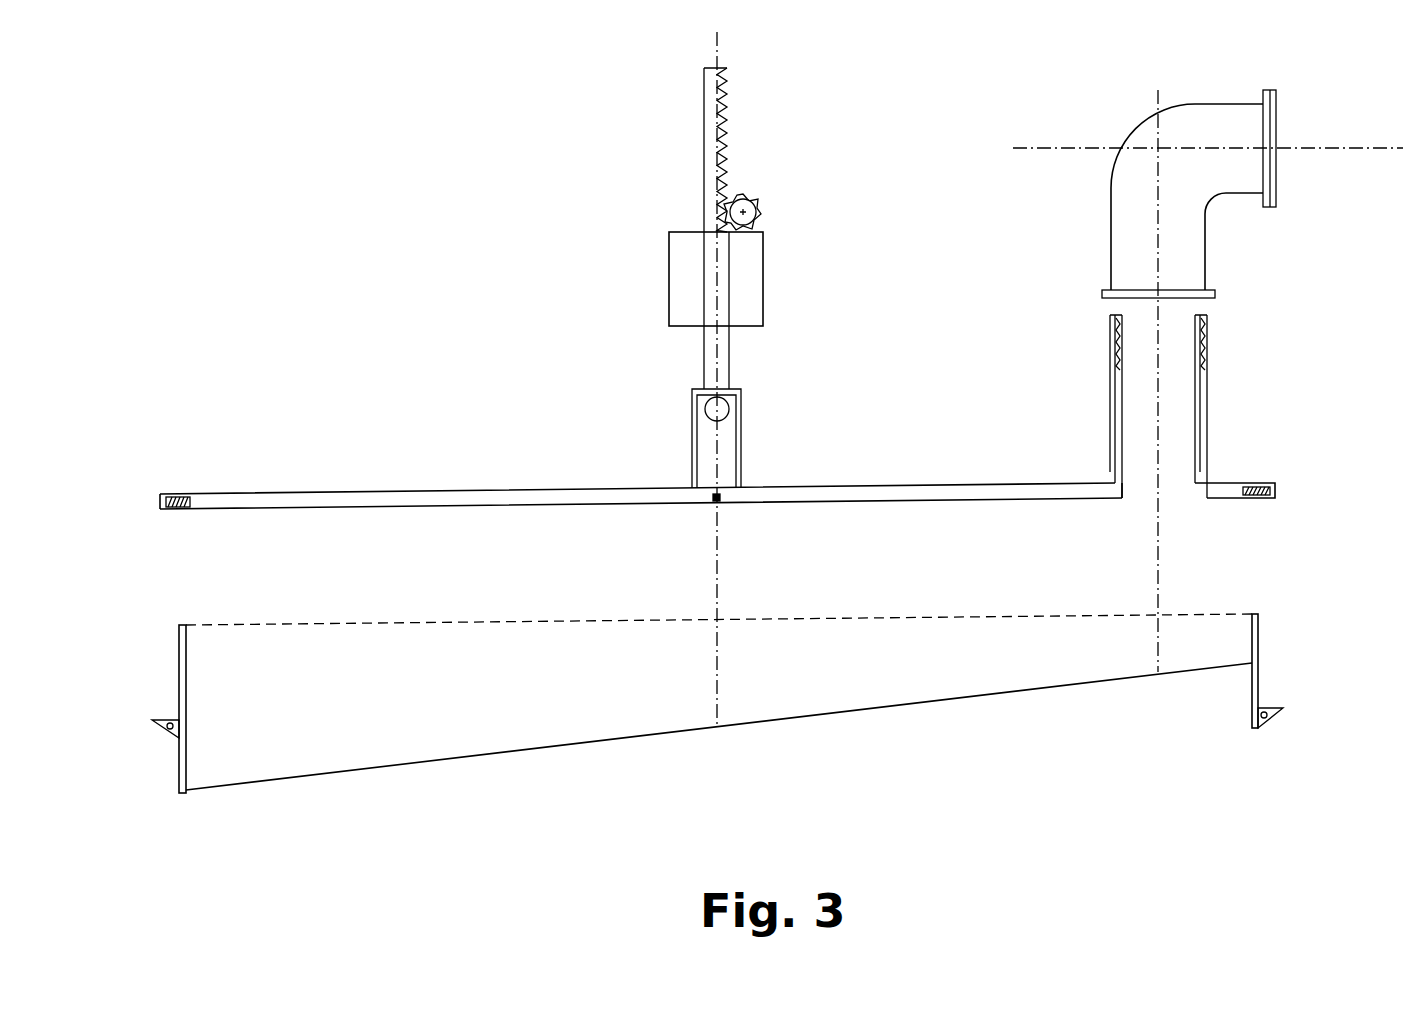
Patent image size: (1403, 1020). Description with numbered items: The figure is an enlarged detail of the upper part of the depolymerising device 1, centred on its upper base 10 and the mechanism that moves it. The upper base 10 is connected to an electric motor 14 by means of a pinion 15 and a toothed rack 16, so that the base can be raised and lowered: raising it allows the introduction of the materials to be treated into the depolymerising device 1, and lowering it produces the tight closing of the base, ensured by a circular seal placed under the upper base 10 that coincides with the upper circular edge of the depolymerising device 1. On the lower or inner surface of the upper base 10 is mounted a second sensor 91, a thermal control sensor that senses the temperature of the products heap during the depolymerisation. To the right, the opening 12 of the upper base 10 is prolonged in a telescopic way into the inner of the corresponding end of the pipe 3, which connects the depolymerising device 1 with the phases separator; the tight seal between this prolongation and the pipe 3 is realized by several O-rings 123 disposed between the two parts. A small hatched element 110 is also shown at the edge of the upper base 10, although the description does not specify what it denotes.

The depolymerising device 1 is at (168, 598).
The pipe 3 is at (1113, 237).
The upper base 10 is at (468, 450).
The opening 12 is at (1145, 490).
The electric motor 14 is at (668, 268).
The pinion 15 is at (745, 190).
The toothed rack 16 is at (698, 92).
The second sensor 91 is at (706, 512).
The sealing strip 110 is at (180, 510).
The O-ring 123 is at (1111, 345).